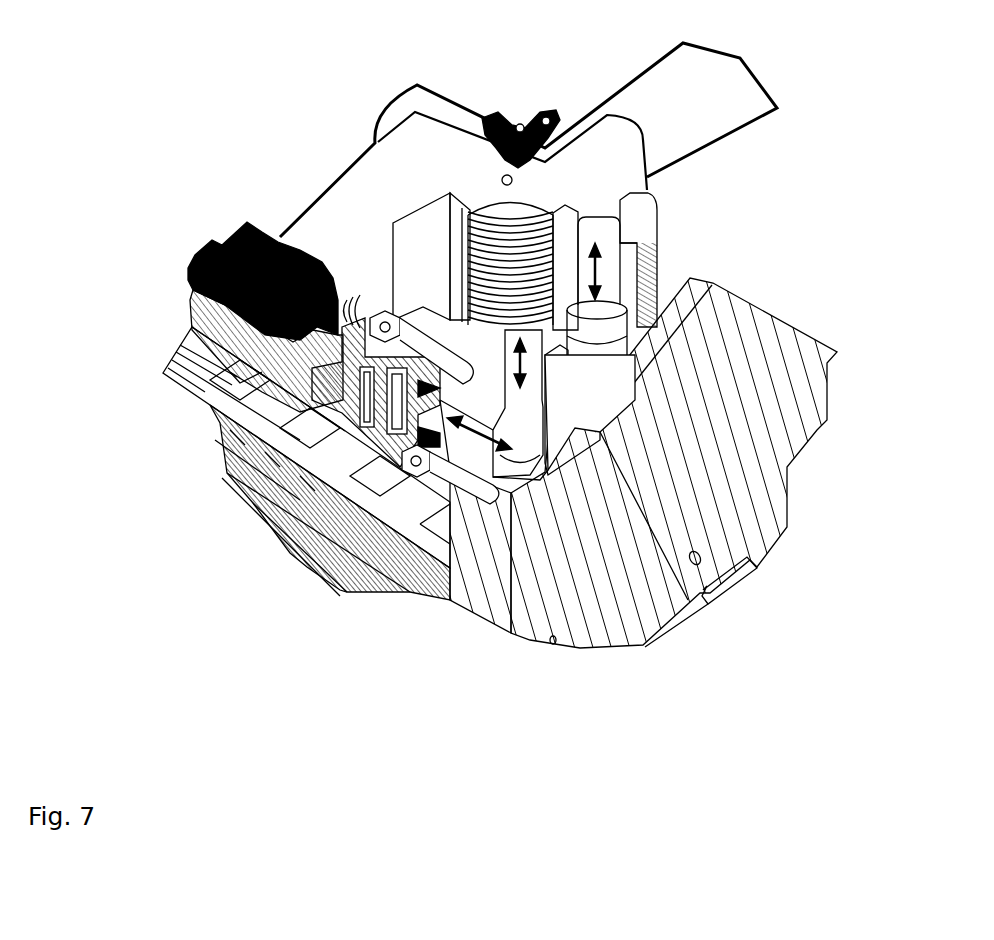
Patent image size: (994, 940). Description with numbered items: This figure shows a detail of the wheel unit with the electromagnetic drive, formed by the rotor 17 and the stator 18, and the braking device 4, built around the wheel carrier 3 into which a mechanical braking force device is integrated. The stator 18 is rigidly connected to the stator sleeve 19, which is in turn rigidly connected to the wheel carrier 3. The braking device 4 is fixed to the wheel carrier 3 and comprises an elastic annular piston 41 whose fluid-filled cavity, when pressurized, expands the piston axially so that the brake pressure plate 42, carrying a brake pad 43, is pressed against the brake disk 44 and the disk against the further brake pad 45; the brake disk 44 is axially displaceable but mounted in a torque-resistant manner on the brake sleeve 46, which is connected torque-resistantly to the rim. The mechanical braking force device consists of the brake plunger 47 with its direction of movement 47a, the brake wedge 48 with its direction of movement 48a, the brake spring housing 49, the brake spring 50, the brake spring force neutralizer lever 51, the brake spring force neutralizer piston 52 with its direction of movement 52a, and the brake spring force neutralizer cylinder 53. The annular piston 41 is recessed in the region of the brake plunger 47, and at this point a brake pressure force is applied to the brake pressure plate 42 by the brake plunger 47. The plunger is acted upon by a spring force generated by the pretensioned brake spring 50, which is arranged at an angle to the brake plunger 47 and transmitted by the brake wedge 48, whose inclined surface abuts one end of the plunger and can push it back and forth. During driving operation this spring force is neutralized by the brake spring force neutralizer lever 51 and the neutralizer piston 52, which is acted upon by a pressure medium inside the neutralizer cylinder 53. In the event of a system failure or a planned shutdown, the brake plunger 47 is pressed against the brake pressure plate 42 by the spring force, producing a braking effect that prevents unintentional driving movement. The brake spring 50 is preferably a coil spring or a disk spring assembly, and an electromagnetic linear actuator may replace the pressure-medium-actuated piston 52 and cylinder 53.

The wheel carrier 3 is at (813, 398).
The braking device 4 is at (243, 490).
The rotor 17 is at (403, 593).
The stator 18 is at (223, 468).
The stator sleeve 19 is at (205, 417).
The annular piston 41 is at (380, 608).
The brake pressure plate 42 is at (352, 595).
The brake pad 43 is at (323, 577).
The brake disk 44 is at (297, 552).
The brake pad 45 is at (278, 535).
The brake sleeve 46 is at (260, 503).
The brake plunger 47 is at (500, 627).
The direction of movement of the brake plunger 47a is at (558, 603).
The brake wedge 48 is at (688, 600).
The direction of movement of the brake wedge 48a is at (740, 587).
The brake spring housing 49 is at (413, 228).
The brake spring 50 is at (452, 197).
The brake spring force neutralizer lever 51 is at (648, 222).
The brake spring force neutralizer piston 52 is at (612, 265).
The direction of movement of the brake spring force neutralizer piston 52a is at (620, 245).
The brake spring force neutralizer cylinder 53 is at (632, 290).